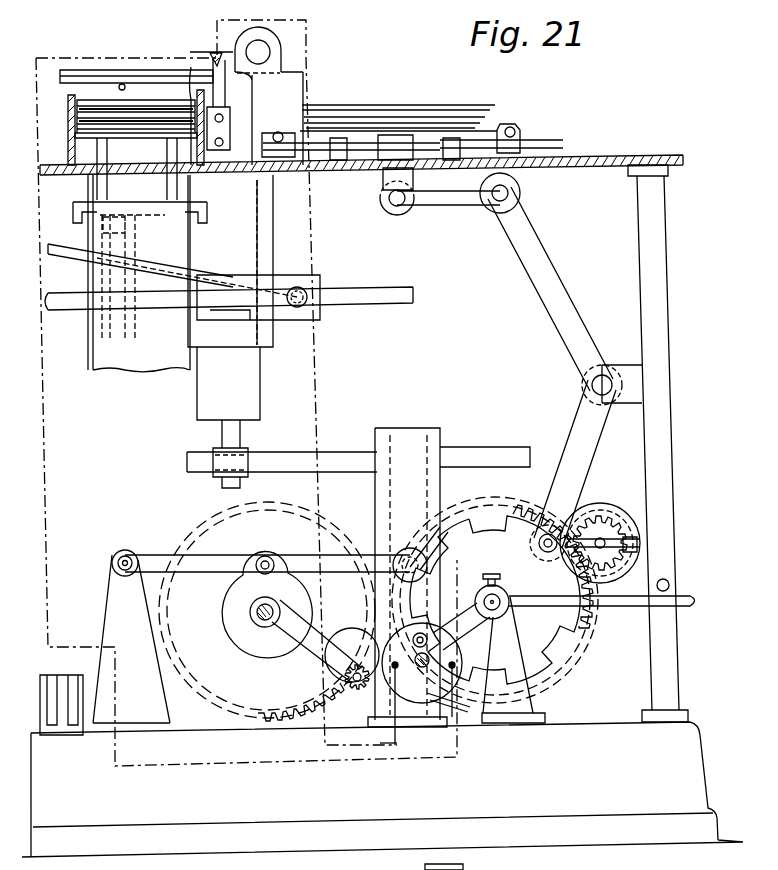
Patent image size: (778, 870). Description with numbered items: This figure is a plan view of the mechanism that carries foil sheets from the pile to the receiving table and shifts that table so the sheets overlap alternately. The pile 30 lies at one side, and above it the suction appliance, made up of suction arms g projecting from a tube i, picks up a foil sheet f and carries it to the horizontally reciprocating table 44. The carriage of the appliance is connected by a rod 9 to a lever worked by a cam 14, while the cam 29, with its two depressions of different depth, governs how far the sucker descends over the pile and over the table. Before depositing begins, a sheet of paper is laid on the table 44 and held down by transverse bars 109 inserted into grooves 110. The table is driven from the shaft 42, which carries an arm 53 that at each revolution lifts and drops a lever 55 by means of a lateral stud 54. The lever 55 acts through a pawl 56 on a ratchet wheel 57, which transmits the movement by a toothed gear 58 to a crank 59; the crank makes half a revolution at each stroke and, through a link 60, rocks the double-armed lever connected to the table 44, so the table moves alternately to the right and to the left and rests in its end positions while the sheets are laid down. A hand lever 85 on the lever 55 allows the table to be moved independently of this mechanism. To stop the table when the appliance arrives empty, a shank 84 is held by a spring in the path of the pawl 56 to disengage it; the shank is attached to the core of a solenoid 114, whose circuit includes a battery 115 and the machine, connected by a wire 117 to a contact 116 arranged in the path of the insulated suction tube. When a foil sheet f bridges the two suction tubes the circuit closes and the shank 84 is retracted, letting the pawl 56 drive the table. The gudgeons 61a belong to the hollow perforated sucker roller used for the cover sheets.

The pile 30 is at (71, 99).
The suction arm g is at (80, 76).
The foil sheet f is at (125, 85).
The contact 116 is at (215, 58).
The tube i is at (263, 53).
The rod 9 is at (283, 73).
The reciprocating table 44 is at (433, 128).
The groove 110 is at (503, 127).
The transverse bar 109 is at (278, 132).
The wire 117 is at (313, 356).
The gudgeon 61a is at (583, 413).
The crank 59 is at (605, 505).
The link 60 is at (612, 536).
The toothed gear 58 is at (582, 623).
The ratchet wheel 57 is at (490, 537).
The pawl 56 is at (443, 597).
The lever 55 is at (457, 622).
The hand lever 85 is at (688, 602).
The shank 84 is at (426, 684).
The solenoid 114 is at (440, 700).
The cam 14 is at (330, 525).
The battery 115 is at (64, 727).
The shaft 42 is at (250, 585).
The cam 29 is at (228, 615).
The arm 53 is at (308, 647).
The lateral stud 54 is at (357, 687).